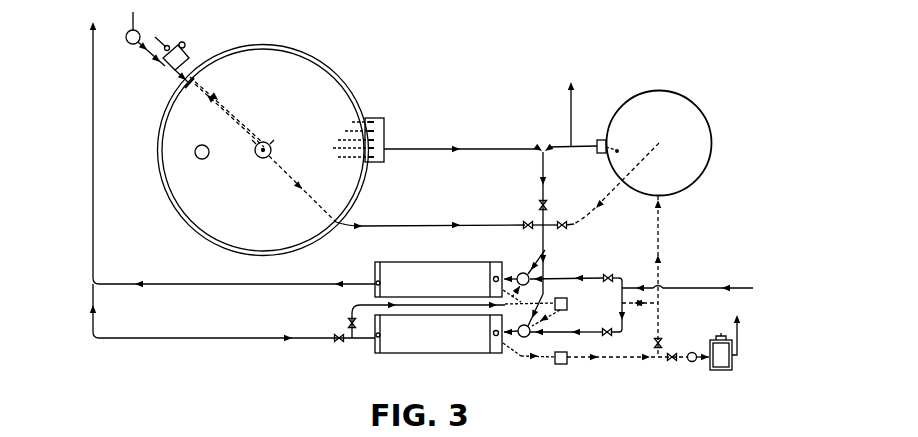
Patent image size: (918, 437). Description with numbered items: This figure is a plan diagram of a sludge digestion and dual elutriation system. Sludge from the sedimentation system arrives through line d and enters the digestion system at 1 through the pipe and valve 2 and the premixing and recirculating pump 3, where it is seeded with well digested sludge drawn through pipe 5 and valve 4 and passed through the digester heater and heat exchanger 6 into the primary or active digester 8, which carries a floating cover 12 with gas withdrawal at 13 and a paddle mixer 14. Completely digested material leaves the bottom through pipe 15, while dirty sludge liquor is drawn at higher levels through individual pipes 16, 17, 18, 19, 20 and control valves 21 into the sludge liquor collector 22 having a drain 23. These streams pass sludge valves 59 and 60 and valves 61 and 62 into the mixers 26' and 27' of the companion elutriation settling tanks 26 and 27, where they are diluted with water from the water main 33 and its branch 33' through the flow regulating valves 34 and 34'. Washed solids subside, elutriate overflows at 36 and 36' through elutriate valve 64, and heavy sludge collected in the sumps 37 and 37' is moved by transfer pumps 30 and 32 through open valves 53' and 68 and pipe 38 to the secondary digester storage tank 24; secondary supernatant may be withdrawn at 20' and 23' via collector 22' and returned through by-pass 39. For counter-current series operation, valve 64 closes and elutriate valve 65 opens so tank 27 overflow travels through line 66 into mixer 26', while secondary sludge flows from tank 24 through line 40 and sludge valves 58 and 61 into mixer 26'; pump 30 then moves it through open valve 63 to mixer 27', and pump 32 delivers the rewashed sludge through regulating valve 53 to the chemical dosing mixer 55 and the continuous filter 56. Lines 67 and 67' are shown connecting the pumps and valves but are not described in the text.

The sludge line d is at (140, 18).
The digestion system inlet 1 is at (123, 40).
The pipe and valve 2 is at (145, 54).
The premixing and recirculating pump 3 is at (165, 37).
The valve 4 is at (165, 62).
The pipe 5 is at (211, 108).
The digester heater and heat exchanger 6 is at (189, 45).
The primary or active digester 8 is at (316, 62).
The floating cover 12 is at (313, 101).
The gas withdrawal 13 is at (271, 146).
The paddle mixer 14 is at (198, 144).
The bottom withdrawal pipe 15 is at (397, 192).
The sludge liquor pipe 16 is at (343, 163).
The sludge liquor pipe 17 is at (343, 150).
The sludge liquor pipe 18 is at (346, 140).
The sludge liquor pipe 19 is at (350, 130).
The sludge liquor pipe 20 is at (353, 121).
The control valves 21 is at (376, 150).
The sludge liquor collector 22 is at (389, 132).
The drain 23 is at (468, 211).
The secondary supernatant withdrawal 23' is at (572, 156).
The secondary supernatant collector 22' is at (591, 136).
The secondary supernatant withdrawal 20' is at (621, 139).
The secondary digester storage tank 24 is at (705, 120).
The by-pass 39 is at (569, 105).
The secondary sludge withdrawal line 40 is at (616, 183).
The sludge transfer pipe 38 is at (660, 243).
The water main 33 is at (663, 310).
The water branch 33' is at (566, 270).
The water meter valve 34 is at (606, 340).
The water meter valve 34' is at (610, 268).
The connecting line 67 is at (610, 305).
The control line 67' is at (612, 368).
The sludge valve 68 is at (635, 310).
The transfer pump 30 is at (560, 296).
The transfer pump 32 is at (558, 367).
The sludge valve 63 is at (550, 323).
The sludge valve 61 is at (516, 275).
The sludge valve 62 is at (523, 315).
The elutriation settling tank 26 is at (438, 279).
The elutriation settling tank 27 is at (465, 337).
The mixer 26' is at (505, 272).
The mixer 27' is at (555, 340).
The sump 37 is at (493, 344).
The sump 37' is at (474, 269).
The elutriate overflow 36 is at (232, 167).
The elutriate overflow 36' is at (234, 312).
The elutriate valve 64 is at (347, 342).
The elutriate valve 65 is at (348, 322).
The elutriate line 66 is at (366, 305).
The sludge valve 58 is at (564, 236).
The sludge valve 59 is at (530, 220).
The sludge valve 60 is at (548, 208).
The regulating valve 53 is at (672, 366).
The sludge valve 53' is at (646, 340).
The chemical dosing mixer 55 is at (695, 348).
The continuous filter 56 is at (725, 353).